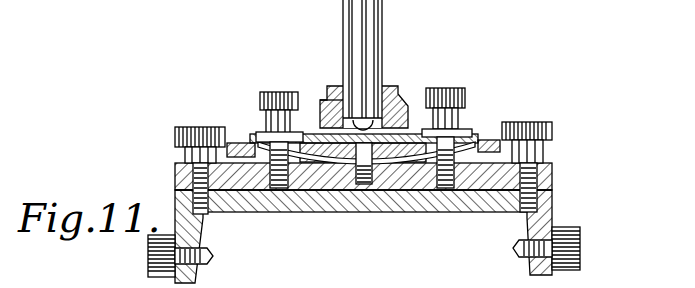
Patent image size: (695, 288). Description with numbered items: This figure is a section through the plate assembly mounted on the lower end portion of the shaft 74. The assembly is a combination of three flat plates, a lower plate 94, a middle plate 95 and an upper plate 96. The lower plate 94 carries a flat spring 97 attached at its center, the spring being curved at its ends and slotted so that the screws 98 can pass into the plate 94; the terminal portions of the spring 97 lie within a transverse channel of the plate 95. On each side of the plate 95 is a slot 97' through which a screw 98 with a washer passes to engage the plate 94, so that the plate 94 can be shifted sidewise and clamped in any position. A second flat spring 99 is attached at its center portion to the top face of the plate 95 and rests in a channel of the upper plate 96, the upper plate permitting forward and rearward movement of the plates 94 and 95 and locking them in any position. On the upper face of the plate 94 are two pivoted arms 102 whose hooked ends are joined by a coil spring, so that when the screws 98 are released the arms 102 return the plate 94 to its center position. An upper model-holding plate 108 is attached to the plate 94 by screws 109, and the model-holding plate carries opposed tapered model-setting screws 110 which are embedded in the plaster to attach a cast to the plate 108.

The shaft 74 is at (376, 18).
The lower plate 94 is at (554, 174).
The plate 95 is at (325, 163).
The upper plate 96 is at (407, 108).
The flat spring 97 is at (377, 193).
The slot 97' is at (371, 165).
The screw 98 is at (277, 92).
The flat spring 99 is at (302, 134).
The arm 102 is at (240, 143).
The upper model-holding plate 108 is at (483, 203).
The screw 109 is at (193, 113).
The thumbscrew 110 is at (150, 257).